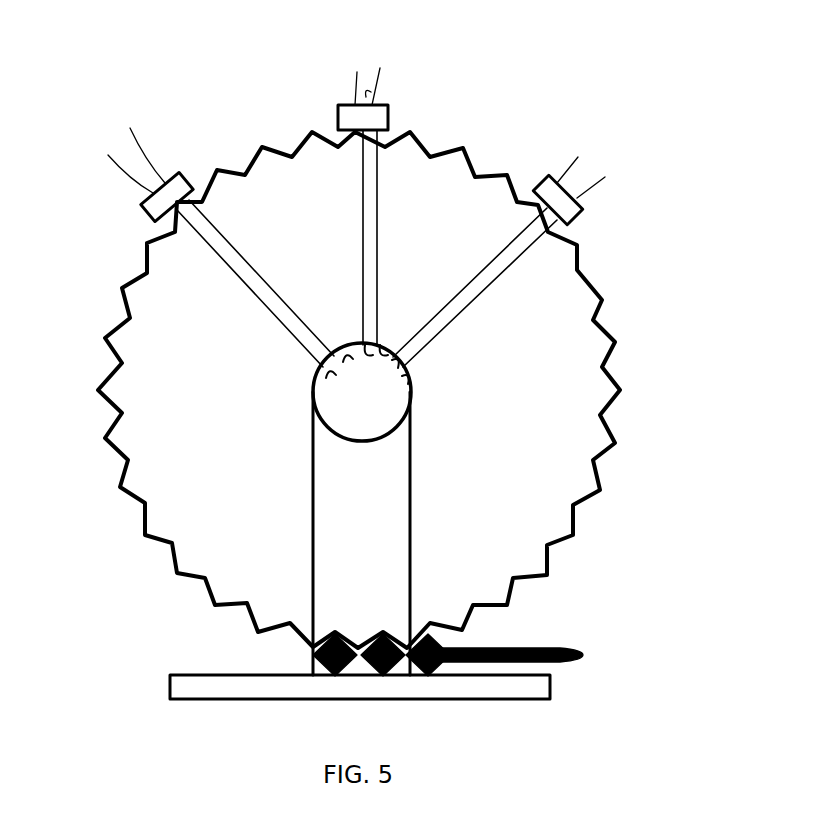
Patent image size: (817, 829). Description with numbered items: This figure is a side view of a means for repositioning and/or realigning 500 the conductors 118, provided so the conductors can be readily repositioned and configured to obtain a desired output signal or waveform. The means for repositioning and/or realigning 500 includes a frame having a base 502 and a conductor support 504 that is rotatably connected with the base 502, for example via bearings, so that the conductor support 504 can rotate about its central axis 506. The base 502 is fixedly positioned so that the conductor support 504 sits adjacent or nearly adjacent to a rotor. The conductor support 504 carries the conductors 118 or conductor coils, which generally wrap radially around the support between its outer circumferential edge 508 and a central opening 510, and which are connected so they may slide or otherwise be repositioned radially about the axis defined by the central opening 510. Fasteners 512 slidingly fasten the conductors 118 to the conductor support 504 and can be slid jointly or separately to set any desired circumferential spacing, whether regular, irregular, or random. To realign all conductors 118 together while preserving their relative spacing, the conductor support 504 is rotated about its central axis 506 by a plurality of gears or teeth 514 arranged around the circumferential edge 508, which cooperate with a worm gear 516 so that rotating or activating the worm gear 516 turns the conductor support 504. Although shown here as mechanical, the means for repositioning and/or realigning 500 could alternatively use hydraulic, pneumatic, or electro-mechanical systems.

The means for repositioning and/or realigning 500 is at (738, 195).
The base 502 is at (410, 578).
The conductor support 504 is at (615, 378).
The central axis 506 is at (364, 390).
The outer circumferential edge 508 is at (517, 177).
The central opening 510 is at (413, 380).
The fasteners 512 is at (390, 112).
The teeth 514 is at (513, 592).
The worm gear 516 is at (437, 643).
The conductors 118 is at (267, 292).